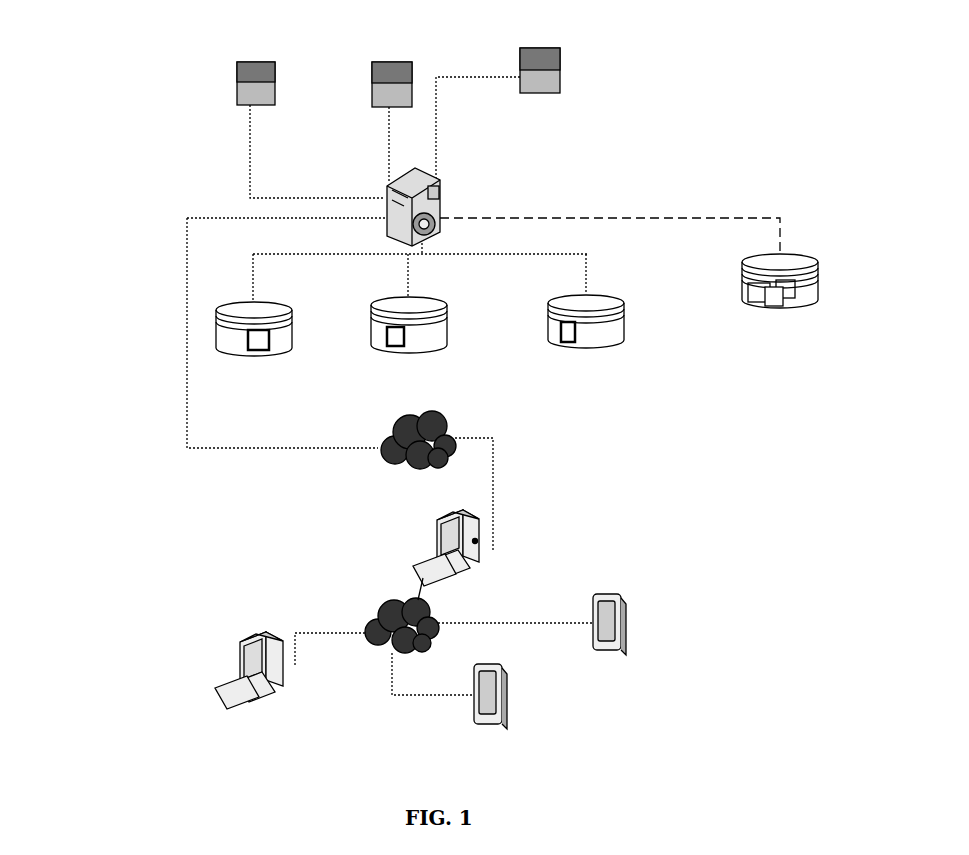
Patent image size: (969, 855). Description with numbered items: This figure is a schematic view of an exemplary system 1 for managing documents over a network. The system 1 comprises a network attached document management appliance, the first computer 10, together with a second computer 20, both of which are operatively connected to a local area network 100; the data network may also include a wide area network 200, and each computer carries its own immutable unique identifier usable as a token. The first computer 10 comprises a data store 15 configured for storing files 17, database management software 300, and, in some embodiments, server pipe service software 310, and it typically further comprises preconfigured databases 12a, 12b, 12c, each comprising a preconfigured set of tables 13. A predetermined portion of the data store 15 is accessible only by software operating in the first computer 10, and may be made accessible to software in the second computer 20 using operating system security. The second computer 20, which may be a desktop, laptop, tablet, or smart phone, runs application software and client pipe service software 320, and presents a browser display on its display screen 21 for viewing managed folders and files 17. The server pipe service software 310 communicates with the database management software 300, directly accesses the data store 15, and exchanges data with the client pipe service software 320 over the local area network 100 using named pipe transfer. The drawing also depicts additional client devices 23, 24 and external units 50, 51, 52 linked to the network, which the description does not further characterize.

The system 1 is at (126, 406).
The first computer 10 is at (455, 199).
The preconfigured database 12a is at (258, 357).
The preconfigured database 12b is at (433, 349).
The preconfigured database 12c is at (620, 322).
The tables 13 is at (387, 338).
The data store 15 is at (807, 302).
The files 17 is at (776, 300).
The second computer 20 is at (430, 538).
The display screen 21 is at (453, 537).
The mobile device 23 is at (510, 706).
The mobile device 24 is at (629, 630).
The external data source 50 is at (236, 61).
The external data source 51 is at (389, 61).
The external data source 52 is at (520, 86).
The local area network 100 is at (430, 123).
The wide area network 200 is at (382, 613).
The database management software 300 is at (436, 197).
The server pipe service software 310 is at (414, 205).
The client pipe service software 320 is at (478, 540).